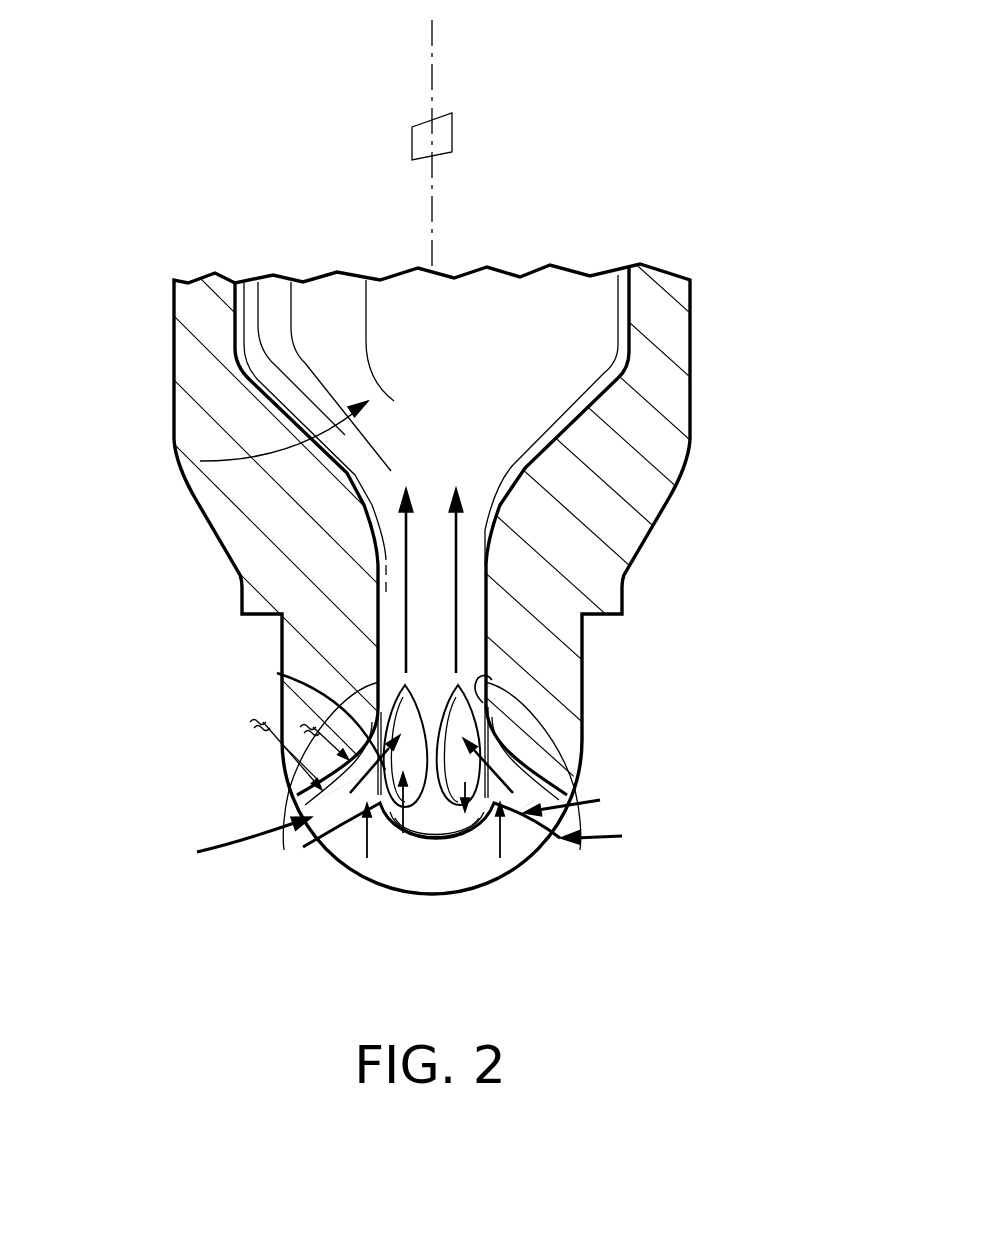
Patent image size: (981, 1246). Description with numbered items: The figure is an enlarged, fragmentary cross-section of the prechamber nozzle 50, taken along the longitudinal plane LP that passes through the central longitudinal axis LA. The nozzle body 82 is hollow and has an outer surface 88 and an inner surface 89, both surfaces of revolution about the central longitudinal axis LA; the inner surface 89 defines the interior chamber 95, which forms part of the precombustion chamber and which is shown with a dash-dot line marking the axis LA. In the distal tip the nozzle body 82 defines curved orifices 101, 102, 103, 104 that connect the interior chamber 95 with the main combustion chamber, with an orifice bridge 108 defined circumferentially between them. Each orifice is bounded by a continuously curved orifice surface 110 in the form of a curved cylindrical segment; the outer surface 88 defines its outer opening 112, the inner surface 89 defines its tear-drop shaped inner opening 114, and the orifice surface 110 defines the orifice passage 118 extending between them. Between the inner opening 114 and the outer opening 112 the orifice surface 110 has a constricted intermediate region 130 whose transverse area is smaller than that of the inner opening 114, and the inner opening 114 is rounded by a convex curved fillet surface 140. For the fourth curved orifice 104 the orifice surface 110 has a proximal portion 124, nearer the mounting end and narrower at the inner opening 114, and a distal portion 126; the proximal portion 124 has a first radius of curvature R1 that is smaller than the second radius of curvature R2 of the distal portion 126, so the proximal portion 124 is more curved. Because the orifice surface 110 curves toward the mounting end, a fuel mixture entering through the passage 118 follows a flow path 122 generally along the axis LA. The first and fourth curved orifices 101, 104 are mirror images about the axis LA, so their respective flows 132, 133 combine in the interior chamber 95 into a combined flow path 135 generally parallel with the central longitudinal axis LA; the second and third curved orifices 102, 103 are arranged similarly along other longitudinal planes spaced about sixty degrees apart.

The nozzle 50 is at (131, 230).
The nozzle body 82 is at (193, 368).
The outer surface 88 is at (592, 638).
The inner surface 89 is at (487, 395).
The interior chamber 95 is at (200, 461).
The first curved orifice 101 is at (566, 838).
The second curved orifice 102 is at (462, 836).
The third curved orifice 103 is at (415, 848).
The fourth curved orifice 104 is at (295, 852).
The orifice bridge 108 is at (447, 835).
The orifice surface 110 is at (354, 830).
The outer opening 112 is at (565, 805).
The inner opening 114 is at (492, 675).
The orifice passage 118 is at (372, 845).
The flow path 122 is at (492, 760).
The proximal portion 124 is at (277, 673).
The distal portion 126 is at (338, 845).
The intermediate region 130 is at (530, 815).
The flow 132 is at (588, 840).
The flow 133 is at (233, 847).
The combined flow path 135 is at (407, 581).
The curved fillet surface 140 is at (497, 832).
The central longitudinal axis LA is at (430, 43).
The longitudinal plane LP is at (438, 137).
The first radius of curvature R1 is at (297, 760).
The second radius of curvature R2 is at (281, 740).